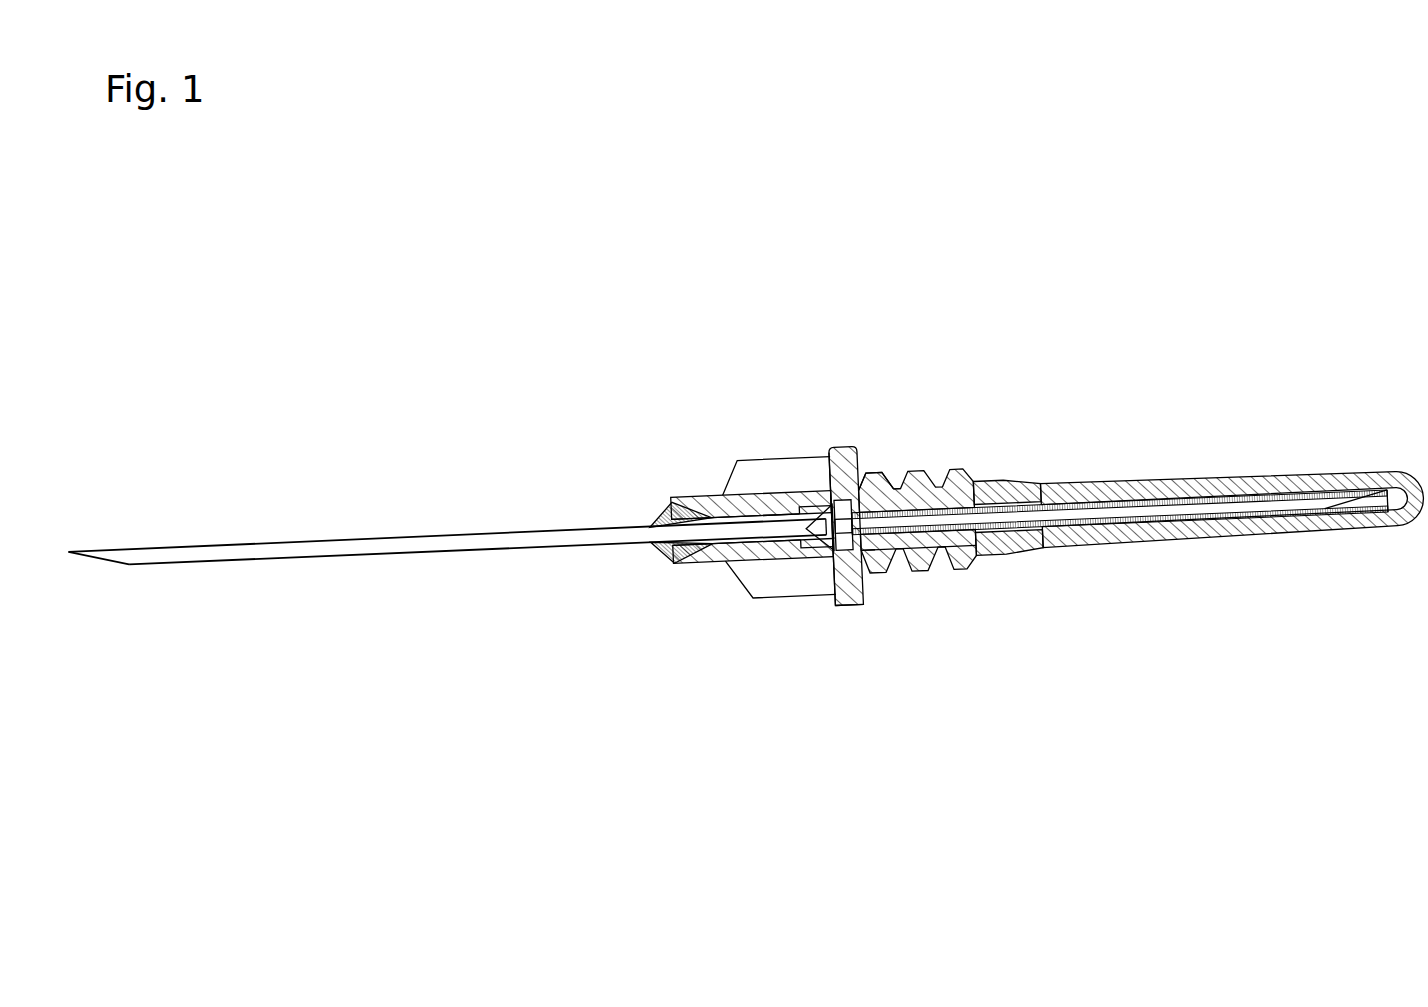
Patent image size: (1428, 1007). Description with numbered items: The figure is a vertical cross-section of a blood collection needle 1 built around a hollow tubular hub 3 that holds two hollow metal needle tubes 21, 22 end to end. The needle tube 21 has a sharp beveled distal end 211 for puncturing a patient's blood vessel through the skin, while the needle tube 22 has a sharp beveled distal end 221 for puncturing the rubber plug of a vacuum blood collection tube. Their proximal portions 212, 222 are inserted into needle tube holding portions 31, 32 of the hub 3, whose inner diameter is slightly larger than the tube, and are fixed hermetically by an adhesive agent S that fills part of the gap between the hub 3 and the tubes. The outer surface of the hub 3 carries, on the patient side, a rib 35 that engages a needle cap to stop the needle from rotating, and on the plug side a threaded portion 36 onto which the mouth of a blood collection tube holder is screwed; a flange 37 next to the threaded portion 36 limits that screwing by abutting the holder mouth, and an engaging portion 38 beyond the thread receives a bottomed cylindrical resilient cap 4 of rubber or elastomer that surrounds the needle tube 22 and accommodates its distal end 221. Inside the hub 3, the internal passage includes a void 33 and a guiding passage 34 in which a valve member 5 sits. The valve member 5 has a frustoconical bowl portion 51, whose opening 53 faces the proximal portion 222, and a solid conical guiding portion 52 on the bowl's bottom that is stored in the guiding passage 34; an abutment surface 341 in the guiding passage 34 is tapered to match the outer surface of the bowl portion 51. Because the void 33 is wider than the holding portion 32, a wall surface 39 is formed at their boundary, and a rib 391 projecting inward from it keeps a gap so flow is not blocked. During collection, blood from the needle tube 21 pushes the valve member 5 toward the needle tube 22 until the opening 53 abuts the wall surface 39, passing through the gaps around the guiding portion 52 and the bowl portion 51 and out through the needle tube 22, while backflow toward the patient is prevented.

The blood collection needle 1 is at (784, 360).
The needle tube 21 is at (447, 554).
The distal end 211 is at (100, 517).
The proximal portion 212 is at (697, 587).
The needle tube 22 is at (1130, 571).
The distal end 221 is at (1365, 561).
The proximal portion 222 is at (931, 571).
The hub 3 is at (874, 510).
The needle tube holding portion 31 is at (736, 496).
The needle tube holding portion 32 is at (945, 483).
The void 33 is at (881, 641).
The guiding passage 34 is at (739, 598).
The abutment surface 341 is at (770, 465).
The rib 35 is at (748, 497).
The threaded portion 36 is at (949, 578).
The flange 37 is at (849, 571).
The engaging portion 38 is at (1011, 480).
The wall surface 39 is at (911, 429).
The rib 391 is at (894, 425).
The resilient cap 4 is at (1230, 472).
The valve member 5 is at (842, 559).
The bowl portion 51 is at (812, 472).
The guiding portion 52 is at (798, 605).
The opening 53 is at (905, 596).
The adhesive agent S is at (845, 493).